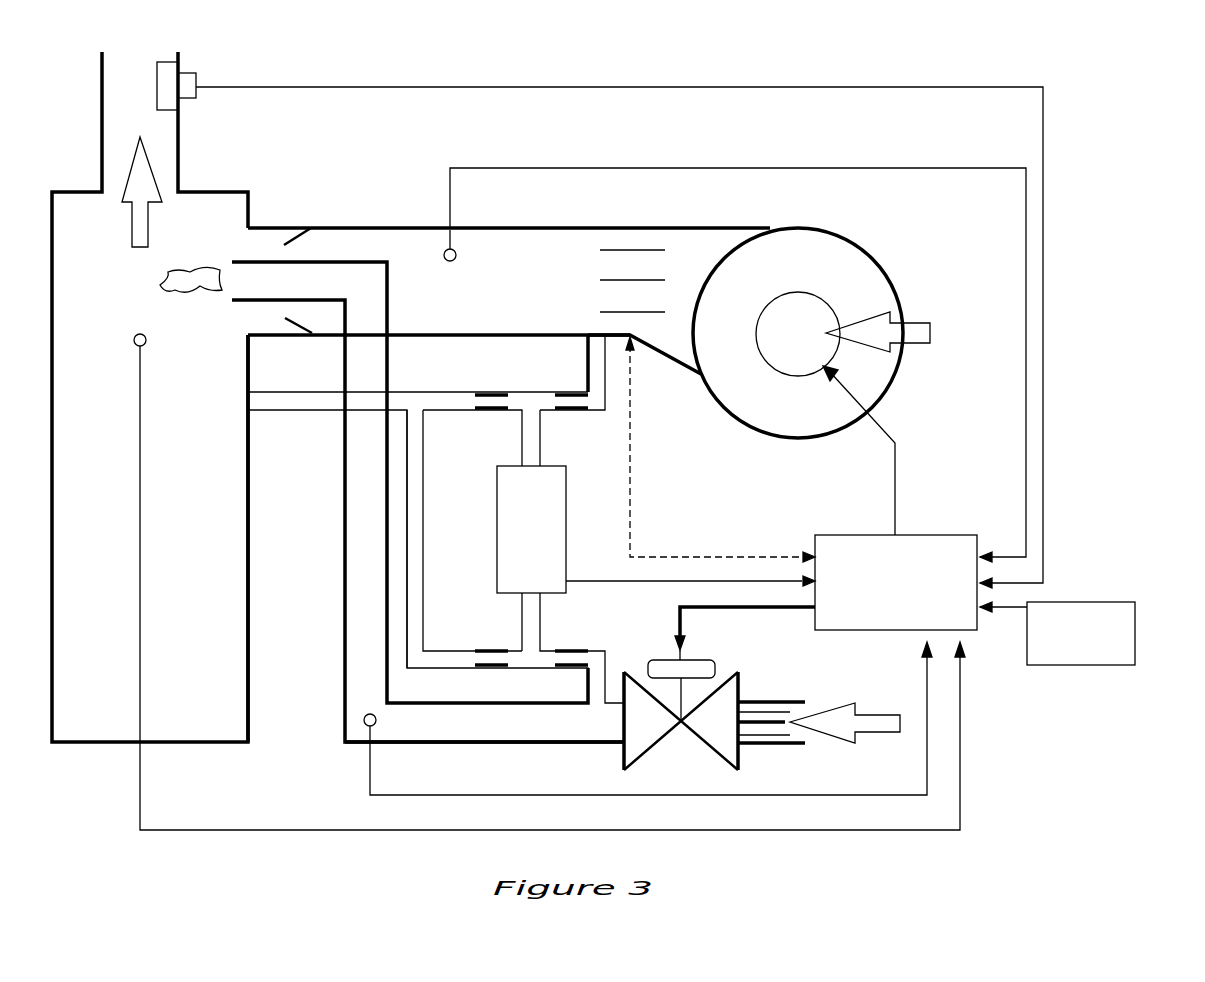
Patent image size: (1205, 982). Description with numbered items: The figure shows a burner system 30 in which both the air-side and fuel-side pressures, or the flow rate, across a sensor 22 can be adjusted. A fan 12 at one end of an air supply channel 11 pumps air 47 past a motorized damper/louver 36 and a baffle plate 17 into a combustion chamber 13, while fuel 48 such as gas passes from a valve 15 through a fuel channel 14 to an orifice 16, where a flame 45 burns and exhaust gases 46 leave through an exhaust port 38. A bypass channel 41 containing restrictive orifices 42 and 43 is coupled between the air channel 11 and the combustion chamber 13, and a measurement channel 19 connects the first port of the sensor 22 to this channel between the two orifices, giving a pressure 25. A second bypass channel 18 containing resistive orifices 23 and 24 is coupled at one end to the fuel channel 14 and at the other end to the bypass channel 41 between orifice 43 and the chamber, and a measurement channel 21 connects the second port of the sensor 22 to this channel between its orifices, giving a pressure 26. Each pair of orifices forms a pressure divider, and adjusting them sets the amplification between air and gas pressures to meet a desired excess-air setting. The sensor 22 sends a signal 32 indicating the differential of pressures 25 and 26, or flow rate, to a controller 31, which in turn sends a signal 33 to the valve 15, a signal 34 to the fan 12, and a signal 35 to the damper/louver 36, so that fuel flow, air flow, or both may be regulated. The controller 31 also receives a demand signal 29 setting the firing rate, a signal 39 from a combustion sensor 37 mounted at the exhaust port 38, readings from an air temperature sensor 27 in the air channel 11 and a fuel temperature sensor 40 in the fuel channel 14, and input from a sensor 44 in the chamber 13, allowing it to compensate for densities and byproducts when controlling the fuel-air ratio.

The air supply channel 11 is at (520, 228).
The fan 12 is at (862, 252).
The combustion chamber 13 is at (250, 602).
The fuel channel 14 is at (505, 745).
The valve 15 is at (742, 758).
The orifice 16 is at (242, 303).
The baffle plate 17 is at (292, 238).
The bypass channel 18 is at (407, 640).
The measurement channel 19 is at (521, 452).
The measurement channel 21 is at (541, 612).
The sensor 22 is at (497, 530).
The resistive orifice R1 23 is at (568, 668).
The resistive orifice R2 24 is at (492, 668).
The pressure 25 is at (541, 448).
The pressure 26 is at (521, 612).
The air temperature sensor 27 is at (456, 259).
The demand signal 29 is at (1080, 602).
The burner system 30 is at (1104, 73).
The controller 31 is at (935, 535).
The signal 32 is at (665, 578).
The signal 33 is at (735, 612).
The signal 34 is at (882, 438).
The signal 35 is at (632, 488).
The damper/louver 36 is at (632, 250).
The combustion sensor 37 is at (190, 80).
The exhaust port 38 is at (130, 74).
The signal 39 is at (620, 86).
The fuel temperature sensor 40 is at (363, 721).
The bypass channel 41 is at (513, 387).
The restrictive orifice R3 42 is at (556, 392).
The restrictive orifice R4 43 is at (490, 392).
The sensor 44 is at (133, 340).
The flame 45 is at (160, 287).
The exhaust gases 46 is at (132, 224).
The air 47 is at (932, 338).
The fuel 48 is at (862, 735).